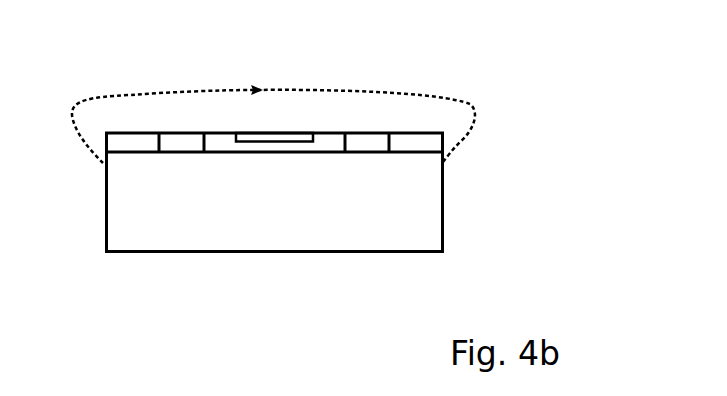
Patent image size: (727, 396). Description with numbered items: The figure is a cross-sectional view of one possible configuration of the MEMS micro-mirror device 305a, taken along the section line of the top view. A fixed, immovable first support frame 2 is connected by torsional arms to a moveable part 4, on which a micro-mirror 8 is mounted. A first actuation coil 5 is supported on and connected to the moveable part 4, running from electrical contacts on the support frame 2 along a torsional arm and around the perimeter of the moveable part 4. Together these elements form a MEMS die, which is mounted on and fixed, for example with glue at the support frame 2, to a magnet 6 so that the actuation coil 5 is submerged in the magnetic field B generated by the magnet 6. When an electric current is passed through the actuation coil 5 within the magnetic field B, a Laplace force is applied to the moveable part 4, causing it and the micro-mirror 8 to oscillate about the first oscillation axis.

The first support frame 2 is at (128, 141).
The first actuation coil 5 is at (225, 140).
The micro-mirror 8 is at (252, 140).
The moveable part 4 is at (272, 148).
The magnet 6 is at (126, 238).
The MEMS micro-mirror device 305a is at (460, 203).
The magnetic field B is at (262, 90).